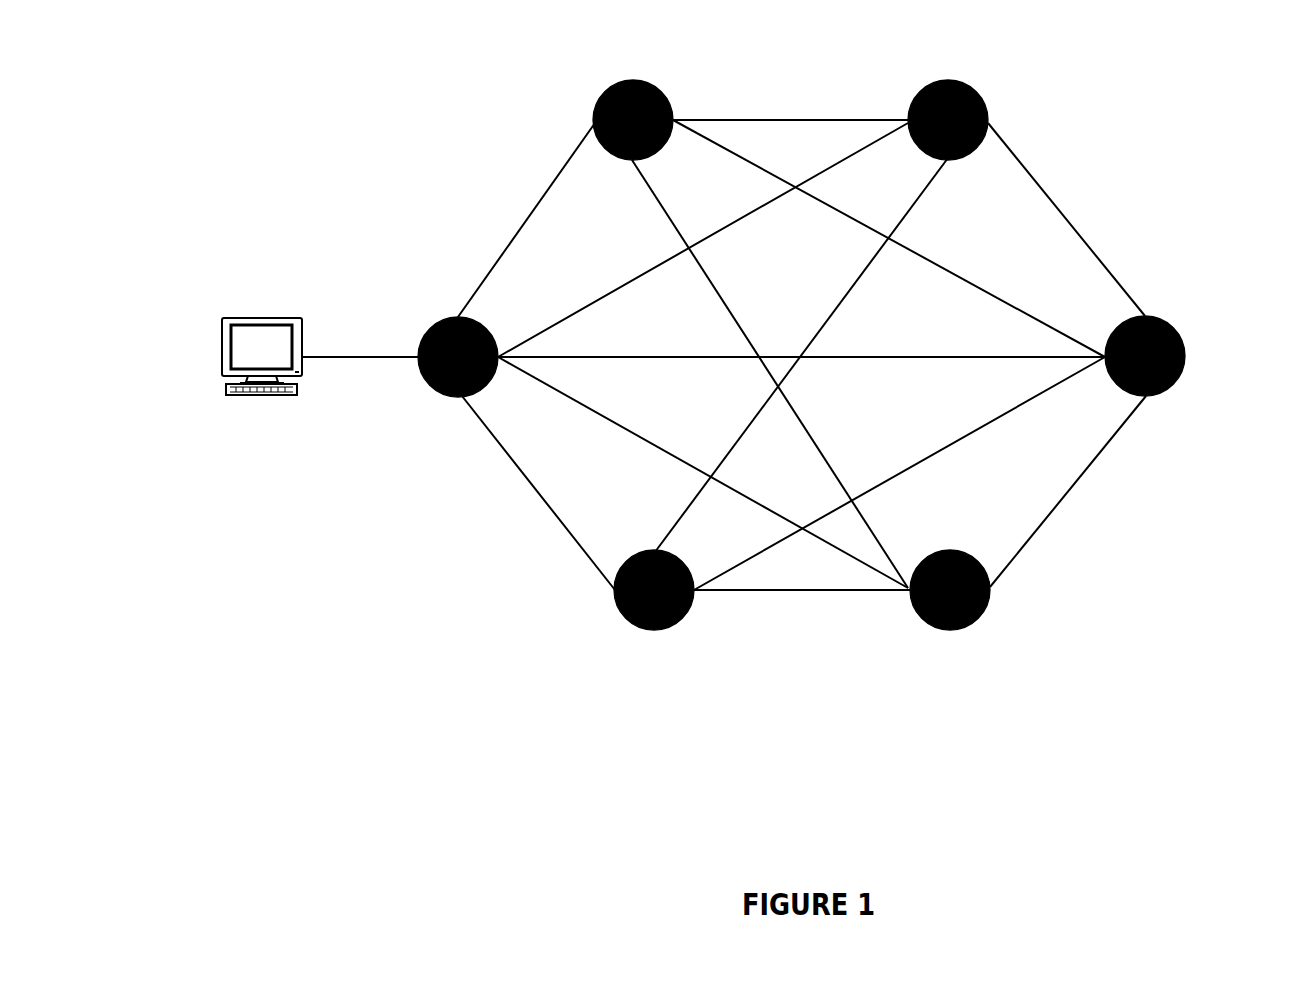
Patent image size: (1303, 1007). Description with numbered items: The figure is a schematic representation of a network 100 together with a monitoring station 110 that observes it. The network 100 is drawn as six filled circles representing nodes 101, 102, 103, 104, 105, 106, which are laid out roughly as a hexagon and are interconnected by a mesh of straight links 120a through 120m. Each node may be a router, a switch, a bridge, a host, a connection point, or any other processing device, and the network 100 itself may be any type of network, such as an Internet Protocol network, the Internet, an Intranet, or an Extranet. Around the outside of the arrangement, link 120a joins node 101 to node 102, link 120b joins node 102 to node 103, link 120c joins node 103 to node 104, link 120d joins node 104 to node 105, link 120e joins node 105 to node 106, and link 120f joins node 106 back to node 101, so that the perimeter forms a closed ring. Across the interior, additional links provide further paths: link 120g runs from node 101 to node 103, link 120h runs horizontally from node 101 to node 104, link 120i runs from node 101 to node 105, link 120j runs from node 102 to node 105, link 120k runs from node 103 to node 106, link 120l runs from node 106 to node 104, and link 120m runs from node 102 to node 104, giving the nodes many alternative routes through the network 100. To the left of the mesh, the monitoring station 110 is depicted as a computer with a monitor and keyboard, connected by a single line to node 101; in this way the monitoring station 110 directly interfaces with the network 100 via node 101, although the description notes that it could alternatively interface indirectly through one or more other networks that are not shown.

The network 100 is at (525, 108).
The node 101 is at (440, 320).
The node 102 is at (628, 80).
The node 103 is at (955, 80).
The node 104 is at (1186, 352).
The node 105 is at (986, 613).
The node 106 is at (662, 634).
The monitoring station 110 is at (250, 316).
The link 120a is at (518, 225).
The link 120b is at (762, 120).
The link 120c is at (1053, 185).
The link 120d is at (1075, 492).
The link 120e is at (800, 598).
The link 120f is at (537, 502).
The link 120g is at (725, 227).
The link 120h is at (848, 358).
The link 120i is at (605, 415).
The link 120j is at (733, 318).
The link 120k is at (847, 300).
The link 120l is at (940, 455).
The link 120m is at (968, 280).